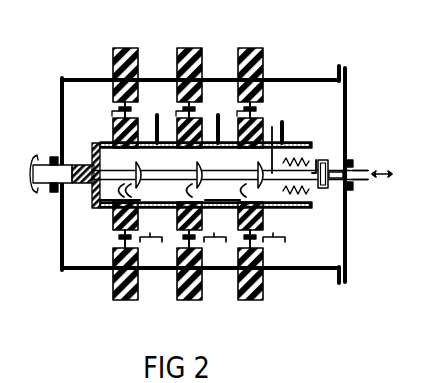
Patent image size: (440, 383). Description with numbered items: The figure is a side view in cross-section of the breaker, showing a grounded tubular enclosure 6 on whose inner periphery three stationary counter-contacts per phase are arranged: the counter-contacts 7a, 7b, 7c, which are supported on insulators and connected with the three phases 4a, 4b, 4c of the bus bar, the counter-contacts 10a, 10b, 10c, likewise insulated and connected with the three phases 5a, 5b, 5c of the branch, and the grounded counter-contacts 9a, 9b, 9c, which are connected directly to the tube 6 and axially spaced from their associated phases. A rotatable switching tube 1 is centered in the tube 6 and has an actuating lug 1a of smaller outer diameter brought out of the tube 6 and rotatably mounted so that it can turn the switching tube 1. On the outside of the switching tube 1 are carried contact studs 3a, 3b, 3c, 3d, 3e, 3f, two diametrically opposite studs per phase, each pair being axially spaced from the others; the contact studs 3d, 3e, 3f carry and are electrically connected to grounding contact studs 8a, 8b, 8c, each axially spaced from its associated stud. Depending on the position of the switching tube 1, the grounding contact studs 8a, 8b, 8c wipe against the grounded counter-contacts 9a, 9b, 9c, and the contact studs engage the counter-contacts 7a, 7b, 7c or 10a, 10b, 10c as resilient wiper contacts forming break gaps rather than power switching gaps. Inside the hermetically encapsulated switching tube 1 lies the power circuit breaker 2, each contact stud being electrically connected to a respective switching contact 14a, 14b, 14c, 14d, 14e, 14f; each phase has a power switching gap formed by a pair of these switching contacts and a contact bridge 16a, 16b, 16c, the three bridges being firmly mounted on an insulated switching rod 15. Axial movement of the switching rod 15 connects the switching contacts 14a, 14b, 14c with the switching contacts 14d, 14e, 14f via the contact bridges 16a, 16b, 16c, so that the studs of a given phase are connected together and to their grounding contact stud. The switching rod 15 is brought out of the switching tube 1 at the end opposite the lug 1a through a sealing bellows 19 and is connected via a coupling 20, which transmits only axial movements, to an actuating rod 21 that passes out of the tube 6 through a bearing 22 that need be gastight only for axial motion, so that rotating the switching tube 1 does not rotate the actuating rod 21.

The switching tube 1 is at (79, 130).
The actuating lug 1a is at (47, 165).
The power circuit breaker 2 is at (101, 242).
The contact stud 3a is at (112, 123).
The contact stud 3b is at (180, 120).
The contact stud 3c is at (241, 120).
The contact stud 3d is at (134, 240).
The contact stud 3e is at (198, 240).
The contact stud 3f is at (261, 241).
The phase of bus bar 4a is at (125, 48).
The phase of bus bar 4b is at (189, 48).
The phase of bus bar 4c is at (250, 48).
The phase of branch 5a is at (125, 300).
The phase of branch 5b is at (189, 300).
The phase of branch 5c is at (250, 300).
The tubular enclosure 6 is at (313, 268).
The stationary counter-contact 7a is at (116, 112).
The stationary counter-contact 7b is at (179, 112).
The stationary counter-contact 7c is at (241, 112).
The grounding contact stud 8a is at (136, 243).
The grounding contact stud 8b is at (199, 243).
The grounding contact stud 8c is at (285, 240).
The grounded counter-contact 9a is at (157, 115).
The grounded counter-contact 9b is at (218, 115).
The grounded counter-contact 9c is at (283, 124).
The stationary counter-contact 10a is at (118, 248).
The stationary counter-contact 10b is at (180, 250).
The stationary counter-contact 10c is at (242, 250).
The switching contact 14a is at (61, 142).
The switching contact 14b is at (185, 161).
The switching contact 14c is at (245, 162).
The switching contact 14d is at (122, 189).
The switching contact 14e is at (172, 208).
The switching contact 14f is at (238, 208).
The switching rod 15 is at (272, 127).
The contact bridge 16a is at (134, 190).
The contact bridge 16b is at (243, 190).
The contact bridge 16c is at (289, 192).
The bellows 19 is at (316, 160).
The coupling 20 is at (309, 158).
The actuating rod 21 is at (331, 186).
The bearing 22 is at (351, 184).